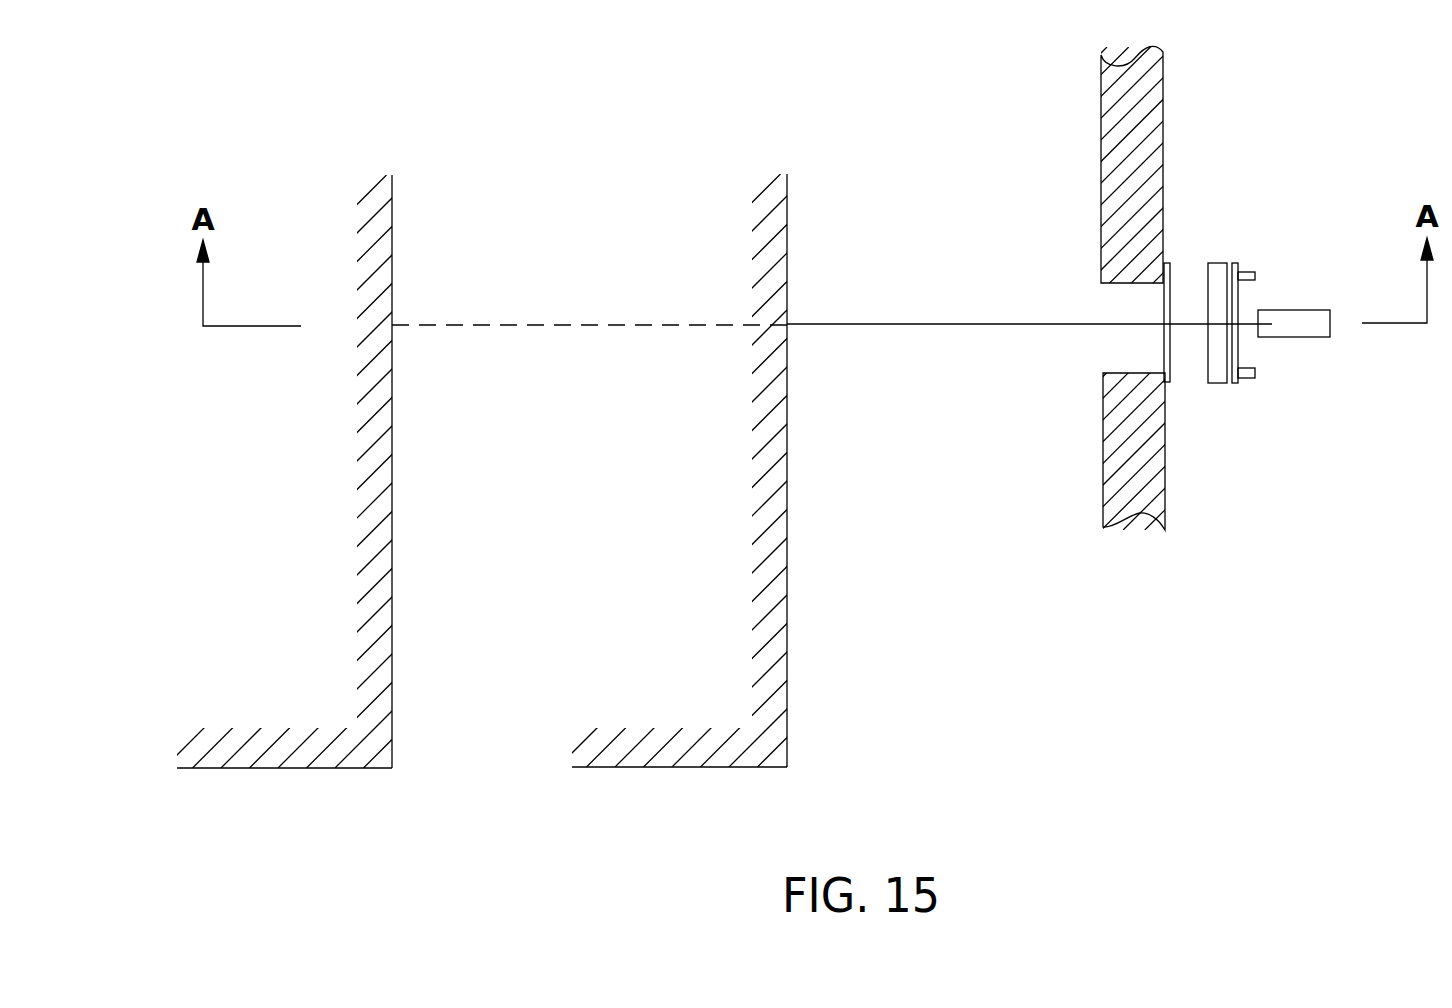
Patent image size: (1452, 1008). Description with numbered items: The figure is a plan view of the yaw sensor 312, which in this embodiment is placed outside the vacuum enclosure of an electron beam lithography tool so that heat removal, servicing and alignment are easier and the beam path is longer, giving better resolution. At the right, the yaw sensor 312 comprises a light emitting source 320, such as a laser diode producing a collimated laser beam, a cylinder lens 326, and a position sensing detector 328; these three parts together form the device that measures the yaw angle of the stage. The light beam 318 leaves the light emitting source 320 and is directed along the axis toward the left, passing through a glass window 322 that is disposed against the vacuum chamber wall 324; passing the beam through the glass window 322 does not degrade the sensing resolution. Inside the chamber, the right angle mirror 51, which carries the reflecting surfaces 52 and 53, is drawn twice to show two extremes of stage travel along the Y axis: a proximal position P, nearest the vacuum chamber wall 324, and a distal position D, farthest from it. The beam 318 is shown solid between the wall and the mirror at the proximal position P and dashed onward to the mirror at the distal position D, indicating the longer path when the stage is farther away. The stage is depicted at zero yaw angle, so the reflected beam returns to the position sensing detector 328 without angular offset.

The right angle mirror 51 is at (256, 722).
The reflecting surface 52 is at (392, 235).
The reflecting surface 53 is at (352, 768).
The distal position D is at (343, 635).
The proximal position P is at (742, 653).
The yaw sensor 312 is at (1038, 326).
The light beam 318 is at (966, 325).
The light emitting source 320 is at (1290, 337).
The glass window 322 is at (1170, 382).
The vacuum chamber wall 324 is at (1140, 513).
The cylinder lens 326 is at (1218, 263).
The position sensing detector 328 is at (1255, 276).